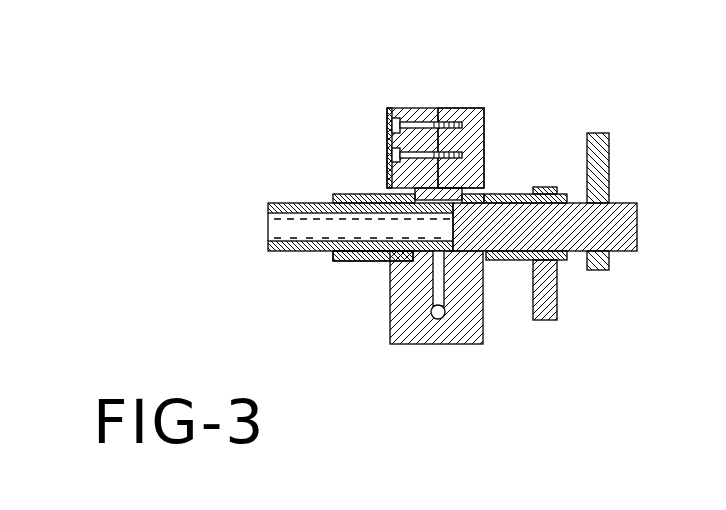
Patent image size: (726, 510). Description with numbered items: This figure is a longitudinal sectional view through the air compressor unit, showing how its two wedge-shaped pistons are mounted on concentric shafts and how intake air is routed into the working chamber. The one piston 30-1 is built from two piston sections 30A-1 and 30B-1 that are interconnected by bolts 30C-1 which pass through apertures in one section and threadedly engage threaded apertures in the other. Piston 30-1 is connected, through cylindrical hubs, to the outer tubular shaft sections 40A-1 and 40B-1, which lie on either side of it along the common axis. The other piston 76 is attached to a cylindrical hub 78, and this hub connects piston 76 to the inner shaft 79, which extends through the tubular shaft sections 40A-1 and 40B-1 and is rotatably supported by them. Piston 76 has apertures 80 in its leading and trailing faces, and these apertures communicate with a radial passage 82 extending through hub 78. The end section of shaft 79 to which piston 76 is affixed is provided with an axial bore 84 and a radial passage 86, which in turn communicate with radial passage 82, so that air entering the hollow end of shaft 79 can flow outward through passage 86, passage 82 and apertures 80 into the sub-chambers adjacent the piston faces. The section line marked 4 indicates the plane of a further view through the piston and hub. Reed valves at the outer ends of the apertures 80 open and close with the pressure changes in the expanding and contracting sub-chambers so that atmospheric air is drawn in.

The wedge-shaped piston 30-1 is at (405, 107).
The piston section 30A-1 is at (422, 108).
The piston section 30B-1 is at (486, 129).
The bolts 30C-1 is at (388, 121).
The cylindrical hub 78 is at (418, 190).
The outer tubular shaft section 40A-1 is at (334, 194).
The outer tubular shaft section 40B-1 is at (563, 259).
The axial bore 84 is at (282, 240).
The radial passage 86 is at (370, 257).
The radial passage 82 is at (435, 280).
The apertures 80 is at (433, 313).
The wedge-shaped piston 76 is at (480, 345).
The inner shaft 79 is at (637, 204).
The section line 4- 4 is at (423, 48).